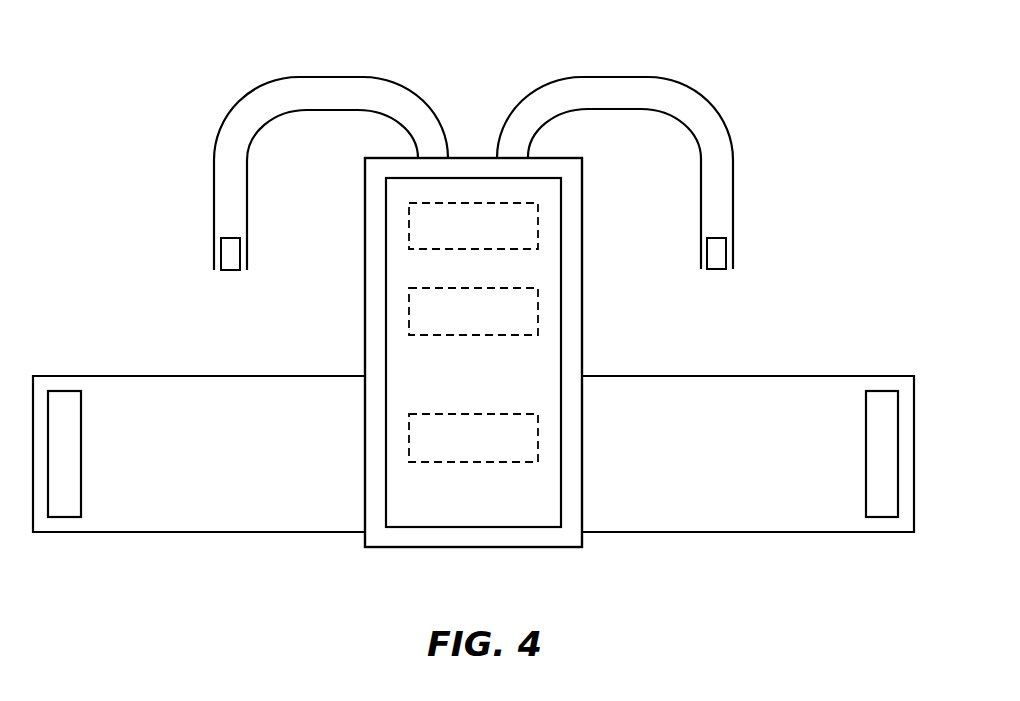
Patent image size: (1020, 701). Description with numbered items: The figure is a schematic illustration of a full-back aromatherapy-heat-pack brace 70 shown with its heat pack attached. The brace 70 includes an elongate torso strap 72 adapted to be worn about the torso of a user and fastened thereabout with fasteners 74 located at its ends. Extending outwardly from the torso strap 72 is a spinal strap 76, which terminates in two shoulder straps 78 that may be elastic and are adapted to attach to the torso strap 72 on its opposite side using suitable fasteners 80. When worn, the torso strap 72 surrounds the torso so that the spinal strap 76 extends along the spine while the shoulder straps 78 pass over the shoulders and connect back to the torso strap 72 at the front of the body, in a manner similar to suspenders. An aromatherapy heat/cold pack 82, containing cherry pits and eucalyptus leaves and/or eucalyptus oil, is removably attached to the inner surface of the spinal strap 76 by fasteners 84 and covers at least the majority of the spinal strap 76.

The full-back brace 70 is at (794, 291).
The torso strap 72 is at (668, 388).
The fasteners 74 is at (63, 505).
The spinal strap 76 is at (373, 310).
The shoulder straps 78 is at (397, 98).
The fasteners 80 is at (225, 265).
The aromatherapy heat/cold pack 82 is at (537, 270).
The fasteners 84 is at (527, 210).